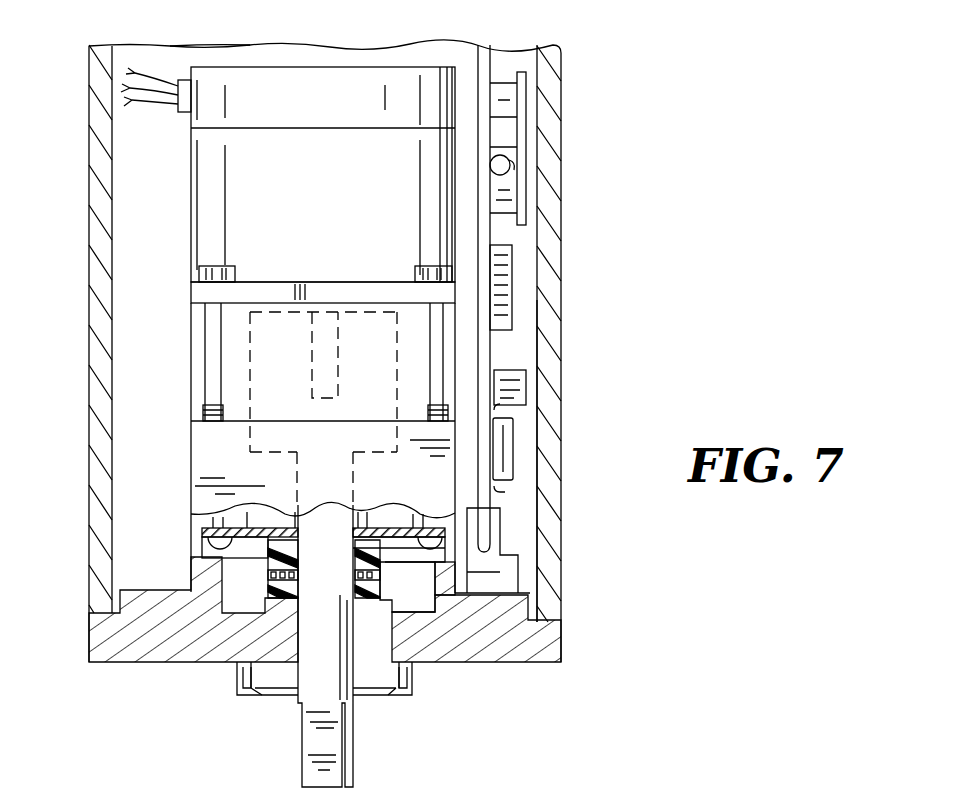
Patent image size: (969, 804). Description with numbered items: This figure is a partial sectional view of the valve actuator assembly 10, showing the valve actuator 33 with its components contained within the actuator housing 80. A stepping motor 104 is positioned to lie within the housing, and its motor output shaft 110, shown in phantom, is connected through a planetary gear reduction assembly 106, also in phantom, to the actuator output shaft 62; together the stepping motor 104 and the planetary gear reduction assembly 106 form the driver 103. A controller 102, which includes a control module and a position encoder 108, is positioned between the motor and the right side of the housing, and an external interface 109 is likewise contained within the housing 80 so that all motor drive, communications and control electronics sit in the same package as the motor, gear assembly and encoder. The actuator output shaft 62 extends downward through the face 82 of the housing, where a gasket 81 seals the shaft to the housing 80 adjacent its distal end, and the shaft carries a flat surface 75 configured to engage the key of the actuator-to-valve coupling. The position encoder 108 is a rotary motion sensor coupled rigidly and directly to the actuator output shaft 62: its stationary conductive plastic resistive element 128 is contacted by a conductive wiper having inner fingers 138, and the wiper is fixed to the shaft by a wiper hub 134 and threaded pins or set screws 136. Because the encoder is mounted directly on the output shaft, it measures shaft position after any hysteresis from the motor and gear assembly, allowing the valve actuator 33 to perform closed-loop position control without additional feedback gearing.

The valve actuator assembly 10 is at (618, 200).
The valve actuator 33 is at (566, 540).
The actuator output shaft 62 is at (300, 700).
The flat surface 75 is at (320, 743).
The housing 80 is at (562, 235).
The gasket 81 is at (388, 697).
The face 82 is at (522, 664).
The controller 102 is at (526, 292).
The driver 103 is at (178, 350).
The stepping motor 104 is at (200, 222).
The planetary gear reduction assembly 106 is at (255, 350).
The position encoder 108 is at (398, 576).
The external interface 109 is at (186, 44).
The motor output shaft 110 is at (338, 362).
The stationary conductive plastic resistive element 128 is at (272, 525).
The wiper hub 134 is at (202, 558).
The threaded pins or set screws 136 is at (268, 575).
The inner fingers 138 is at (312, 547).